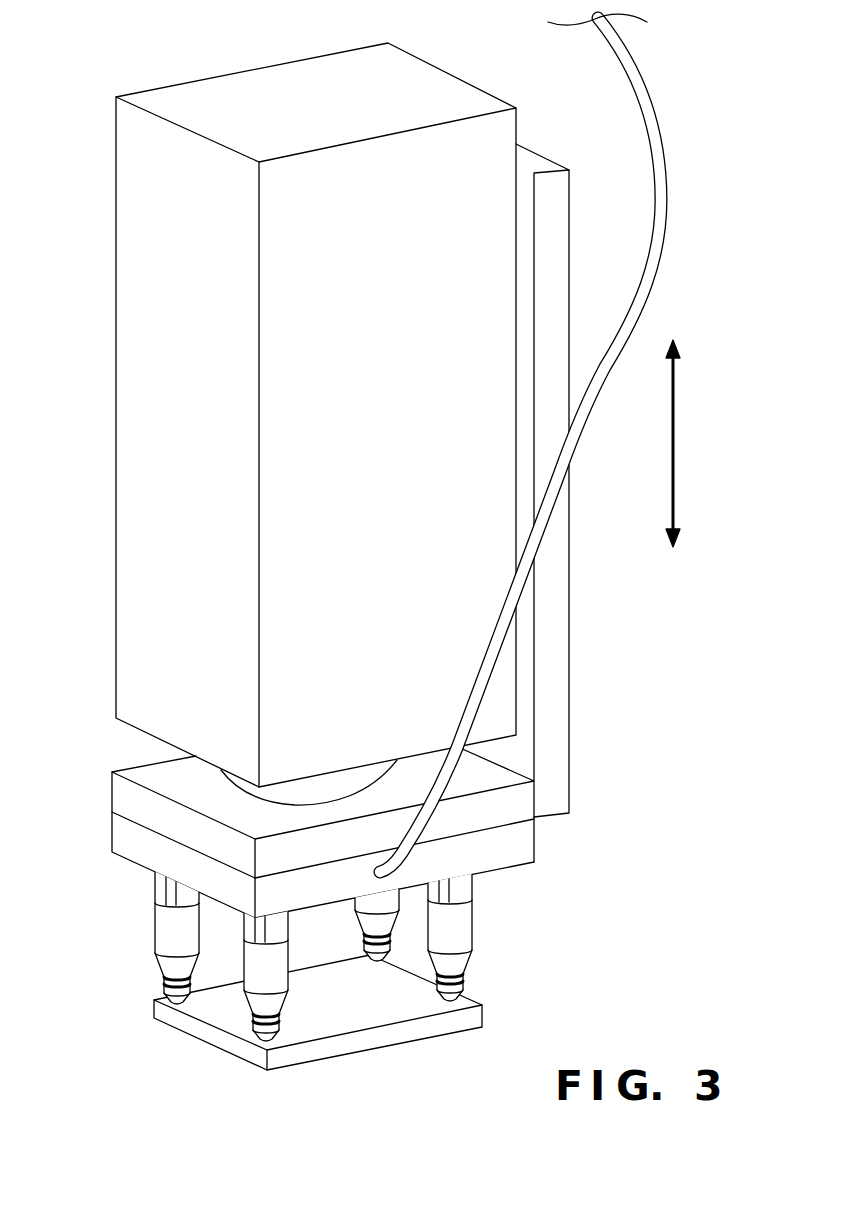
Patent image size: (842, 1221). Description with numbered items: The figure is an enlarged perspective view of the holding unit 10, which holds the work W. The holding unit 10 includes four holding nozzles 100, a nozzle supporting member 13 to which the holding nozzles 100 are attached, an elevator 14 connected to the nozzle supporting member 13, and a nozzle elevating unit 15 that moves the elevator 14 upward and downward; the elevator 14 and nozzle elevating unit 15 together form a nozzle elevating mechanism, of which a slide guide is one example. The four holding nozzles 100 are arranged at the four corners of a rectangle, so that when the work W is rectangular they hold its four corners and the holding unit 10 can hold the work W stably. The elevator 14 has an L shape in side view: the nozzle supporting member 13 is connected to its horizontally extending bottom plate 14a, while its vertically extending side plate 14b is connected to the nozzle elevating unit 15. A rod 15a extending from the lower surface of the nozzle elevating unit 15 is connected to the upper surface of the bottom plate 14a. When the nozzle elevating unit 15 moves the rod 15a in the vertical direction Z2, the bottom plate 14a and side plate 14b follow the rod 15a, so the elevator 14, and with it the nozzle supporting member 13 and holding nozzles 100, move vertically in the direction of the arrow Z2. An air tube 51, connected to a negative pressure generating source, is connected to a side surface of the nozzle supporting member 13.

The holding unit 10 is at (130, 67).
The nozzle supporting member 13 is at (128, 833).
The elevator 14 is at (619, 728).
The bottom plate 14a is at (527, 807).
The side plate 14b is at (544, 764).
The nozzle elevating unit 15 is at (127, 353).
The rod 15a is at (291, 791).
The air tube 51 is at (430, 815).
The holding nozzles 100 is at (385, 922).
The work W is at (220, 1037).
The direction Z2 is at (661, 443).